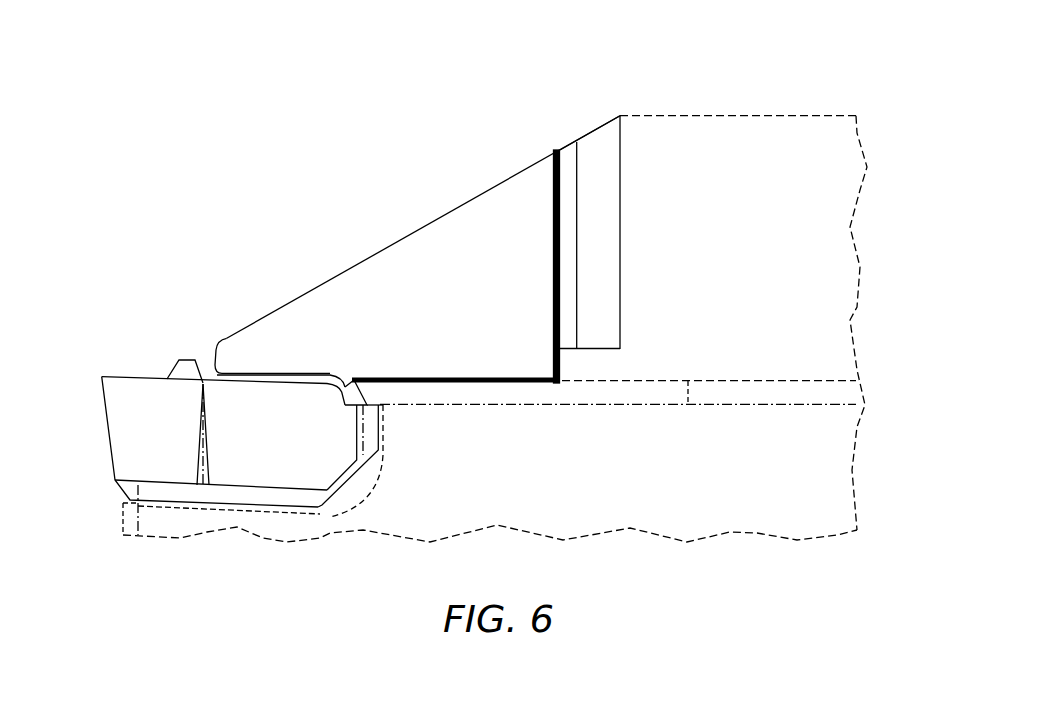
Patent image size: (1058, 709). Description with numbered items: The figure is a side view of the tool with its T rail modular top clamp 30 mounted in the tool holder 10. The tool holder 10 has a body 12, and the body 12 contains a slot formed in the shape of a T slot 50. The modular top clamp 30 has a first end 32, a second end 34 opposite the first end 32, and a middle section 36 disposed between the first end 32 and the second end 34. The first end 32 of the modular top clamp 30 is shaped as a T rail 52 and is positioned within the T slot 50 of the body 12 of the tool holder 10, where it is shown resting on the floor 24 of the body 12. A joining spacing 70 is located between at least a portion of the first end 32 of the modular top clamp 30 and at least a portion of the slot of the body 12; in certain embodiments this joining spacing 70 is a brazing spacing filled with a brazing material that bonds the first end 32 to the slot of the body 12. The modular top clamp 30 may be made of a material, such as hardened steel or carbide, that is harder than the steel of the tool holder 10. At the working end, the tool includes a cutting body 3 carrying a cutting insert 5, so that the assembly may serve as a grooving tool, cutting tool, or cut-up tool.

The cutting body 3 is at (243, 512).
The cutting insert 5 is at (107, 432).
The tool holder 10 is at (868, 312).
The body 12 is at (788, 207).
The floor 24 is at (593, 357).
The modular top clamp 30 is at (383, 230).
The first end 32 is at (585, 132).
The second end 34 is at (228, 333).
The middle section 36 is at (398, 237).
The T slot 50 is at (622, 308).
The T rail 52 is at (597, 262).
The joining spacing 70 is at (560, 218).